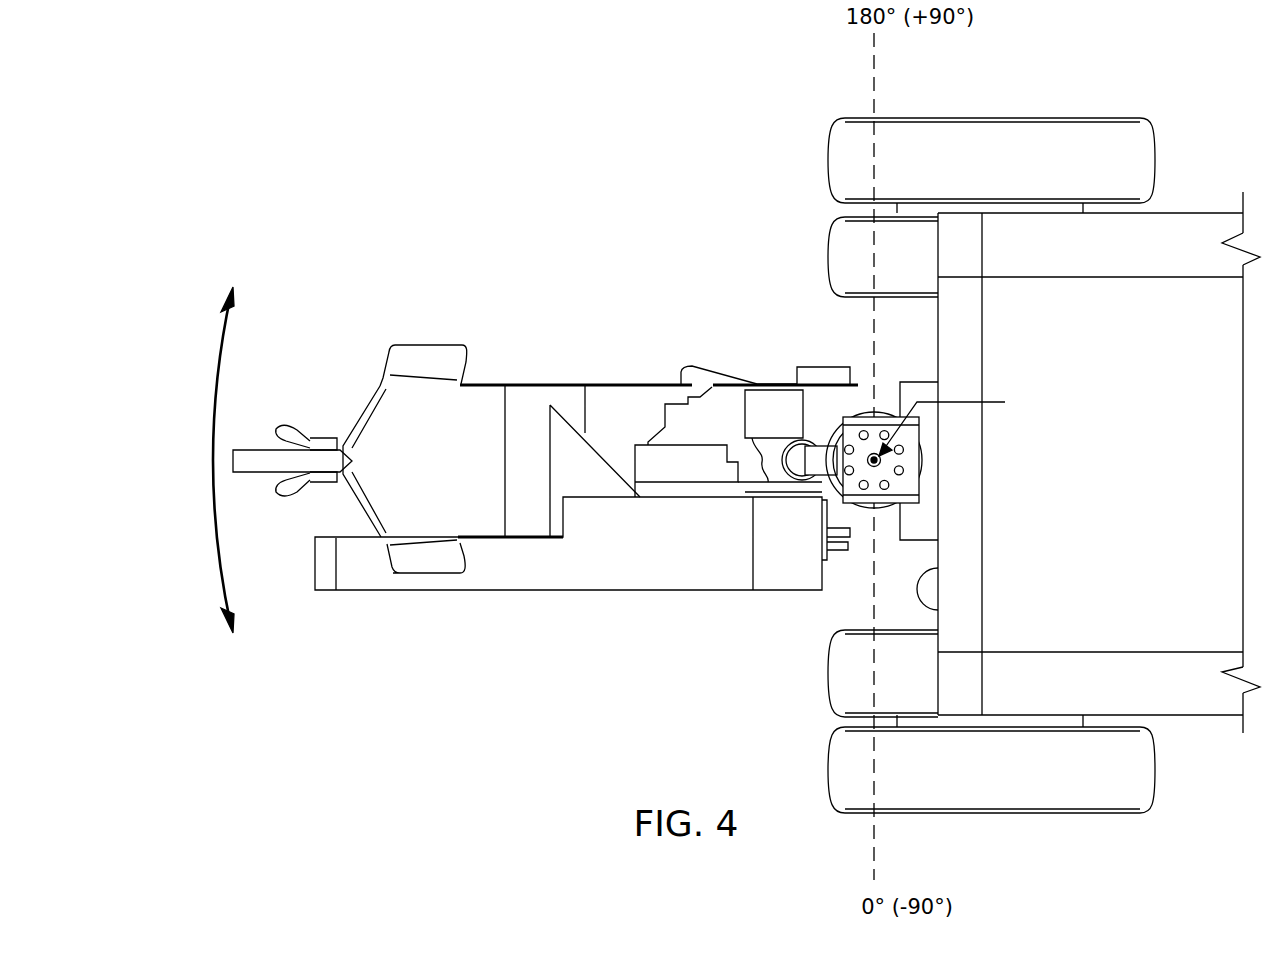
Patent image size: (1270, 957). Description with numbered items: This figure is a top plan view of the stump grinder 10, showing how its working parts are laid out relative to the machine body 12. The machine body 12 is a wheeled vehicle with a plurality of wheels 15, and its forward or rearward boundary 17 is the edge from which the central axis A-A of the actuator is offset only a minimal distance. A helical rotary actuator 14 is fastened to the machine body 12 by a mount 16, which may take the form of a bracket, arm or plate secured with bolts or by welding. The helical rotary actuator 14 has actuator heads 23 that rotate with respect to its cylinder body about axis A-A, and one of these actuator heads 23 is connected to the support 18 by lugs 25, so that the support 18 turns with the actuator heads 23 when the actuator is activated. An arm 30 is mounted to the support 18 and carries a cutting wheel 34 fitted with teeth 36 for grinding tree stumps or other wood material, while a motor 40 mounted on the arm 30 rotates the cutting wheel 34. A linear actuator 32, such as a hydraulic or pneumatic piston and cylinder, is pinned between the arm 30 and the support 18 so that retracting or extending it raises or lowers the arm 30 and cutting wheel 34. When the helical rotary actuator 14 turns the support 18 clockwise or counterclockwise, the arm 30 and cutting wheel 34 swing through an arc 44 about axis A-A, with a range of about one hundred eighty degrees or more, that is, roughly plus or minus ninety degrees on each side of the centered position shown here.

The stump grinder 10 is at (558, 158).
The machine body 12 is at (1123, 481).
The helical rotary actuator 14 is at (883, 508).
The wheels 15 is at (1012, 117).
The mount 16 is at (917, 382).
The forward or rearward boundary 17 is at (938, 600).
The support 18 is at (867, 500).
The actuator heads 23 is at (926, 463).
The lugs 25 is at (902, 446).
The arm 30 is at (615, 384).
The linear actuator 32 is at (768, 478).
The cutting wheel 34 is at (248, 449).
The teeth 36 is at (287, 428).
The motor 40 is at (596, 592).
The arc 44 is at (200, 441).